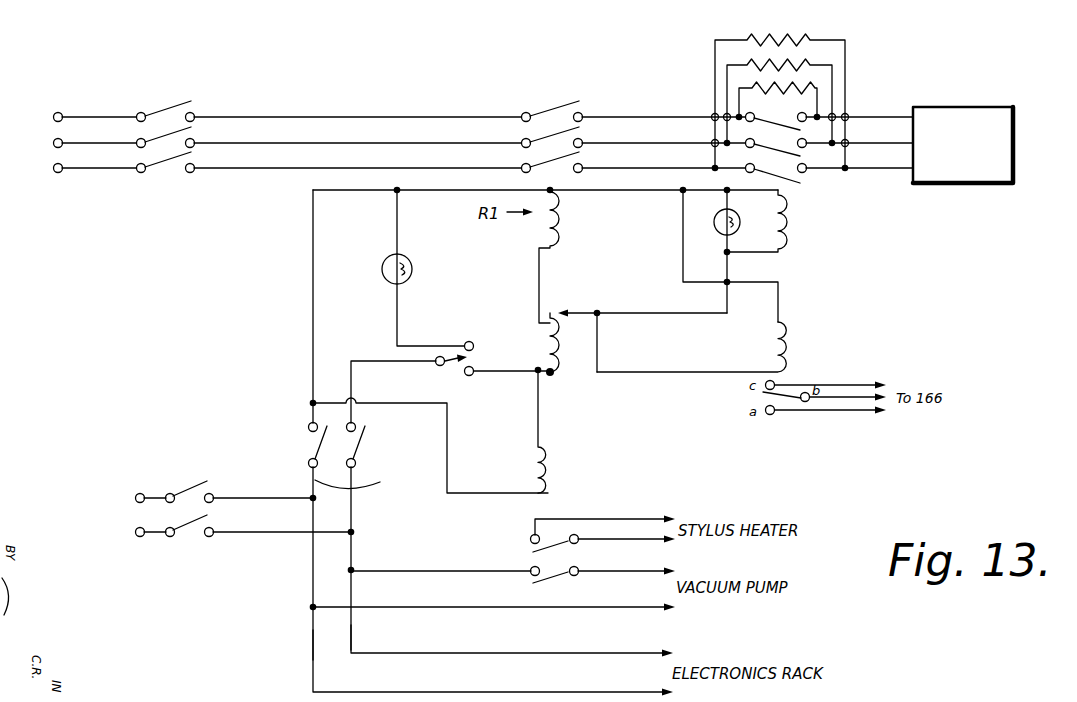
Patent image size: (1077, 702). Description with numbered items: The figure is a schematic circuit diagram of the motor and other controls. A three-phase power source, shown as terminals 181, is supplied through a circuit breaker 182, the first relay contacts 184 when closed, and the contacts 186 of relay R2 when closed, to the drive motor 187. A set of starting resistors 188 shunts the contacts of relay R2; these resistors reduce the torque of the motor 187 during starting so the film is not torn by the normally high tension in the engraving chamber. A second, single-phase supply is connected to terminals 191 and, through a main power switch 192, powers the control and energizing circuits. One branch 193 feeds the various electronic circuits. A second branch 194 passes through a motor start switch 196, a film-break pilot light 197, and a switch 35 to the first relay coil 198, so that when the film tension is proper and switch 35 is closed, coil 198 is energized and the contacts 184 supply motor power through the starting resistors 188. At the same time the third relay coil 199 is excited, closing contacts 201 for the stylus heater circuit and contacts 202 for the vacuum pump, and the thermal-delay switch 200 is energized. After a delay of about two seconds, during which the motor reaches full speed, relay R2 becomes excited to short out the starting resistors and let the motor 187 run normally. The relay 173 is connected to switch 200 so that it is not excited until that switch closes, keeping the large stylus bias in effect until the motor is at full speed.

The terminals 181 is at (54, 166).
The circuit breaker 182 is at (168, 104).
The contacts of relay R1 184 is at (556, 103).
The contacts of relay R2 186 is at (793, 184).
The drive motor 187 is at (975, 107).
The starting resistors 188 is at (812, 84).
The terminals 191 is at (137, 532).
The main power switch 192 is at (196, 487).
The branch 193 is at (350, 637).
The second branch 194 is at (364, 483).
The motor start switch 196 is at (365, 436).
The film-break pilot light 197 is at (413, 268).
The coil of relay R1 198 is at (560, 218).
The coil of relay R3 199 is at (560, 463).
The thermal-delay switch 200 is at (577, 312).
The contacts 201 is at (552, 548).
The contacts 202 is at (560, 575).
The relay 173 is at (788, 349).
The switch 35 is at (457, 368).
The relay R2 is at (834, 189).